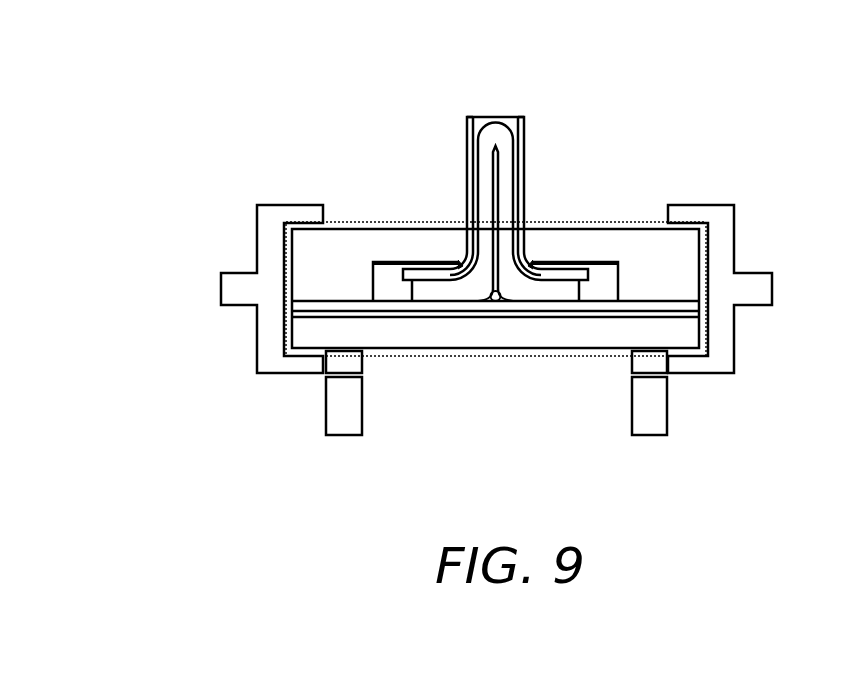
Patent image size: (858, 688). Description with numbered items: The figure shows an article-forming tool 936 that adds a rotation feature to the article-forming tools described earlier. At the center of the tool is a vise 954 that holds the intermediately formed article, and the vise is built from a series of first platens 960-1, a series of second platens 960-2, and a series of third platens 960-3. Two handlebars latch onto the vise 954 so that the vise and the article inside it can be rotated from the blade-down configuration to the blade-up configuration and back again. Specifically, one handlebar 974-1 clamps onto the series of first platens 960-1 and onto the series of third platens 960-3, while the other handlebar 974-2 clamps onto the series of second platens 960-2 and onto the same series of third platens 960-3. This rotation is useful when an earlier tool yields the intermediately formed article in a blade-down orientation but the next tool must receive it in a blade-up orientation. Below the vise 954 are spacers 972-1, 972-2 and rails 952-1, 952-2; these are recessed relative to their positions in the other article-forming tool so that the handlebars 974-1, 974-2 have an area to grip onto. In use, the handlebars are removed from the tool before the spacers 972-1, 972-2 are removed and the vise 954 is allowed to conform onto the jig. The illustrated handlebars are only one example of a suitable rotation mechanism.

The article-forming tool 936 is at (357, 118).
The vise 954 is at (594, 221).
The handlebar 974-1 is at (257, 239).
The handlebar 974-2 is at (735, 347).
The series of first platens 960-1 is at (365, 261).
The series of second platens 960-2 is at (689, 261).
The series of third platens 960-3 is at (527, 342).
The spacer 972-1 is at (363, 362).
The spacer 972-2 is at (632, 363).
The rail 952-1 is at (363, 405).
The rail 952-2 is at (632, 405).